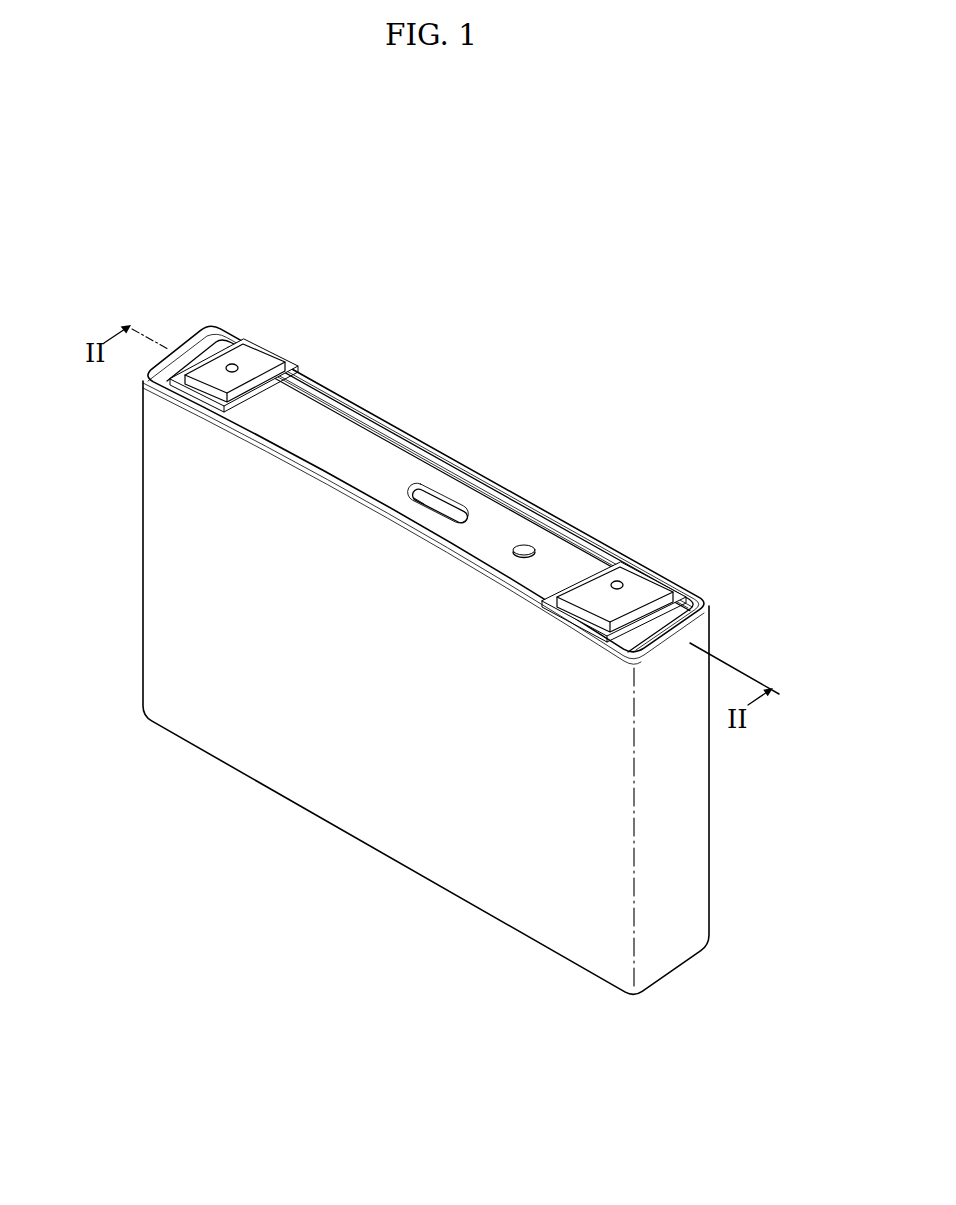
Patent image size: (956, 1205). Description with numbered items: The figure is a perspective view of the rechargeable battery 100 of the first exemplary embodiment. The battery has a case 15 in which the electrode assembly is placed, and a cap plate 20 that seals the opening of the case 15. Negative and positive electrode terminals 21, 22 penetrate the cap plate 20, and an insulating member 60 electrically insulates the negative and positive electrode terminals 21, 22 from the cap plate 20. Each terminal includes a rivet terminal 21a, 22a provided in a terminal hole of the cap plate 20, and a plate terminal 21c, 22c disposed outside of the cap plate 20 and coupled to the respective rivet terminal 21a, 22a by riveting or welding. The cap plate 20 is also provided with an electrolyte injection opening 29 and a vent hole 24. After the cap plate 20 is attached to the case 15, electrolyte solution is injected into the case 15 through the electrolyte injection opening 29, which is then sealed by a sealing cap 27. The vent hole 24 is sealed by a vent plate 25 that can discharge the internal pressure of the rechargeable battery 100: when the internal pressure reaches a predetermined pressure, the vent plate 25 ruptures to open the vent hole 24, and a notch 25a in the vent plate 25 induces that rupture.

The rechargeable battery 100 is at (477, 156).
The case 15 is at (342, 806).
The cap plate 20 is at (355, 437).
The negative electrode terminal 21 is at (251, 334).
The rivet terminal 21a is at (234, 364).
The plate terminal 21c is at (270, 363).
The positive electrode terminal 22 is at (632, 559).
The rivet terminal 22a is at (621, 585).
The plate terminal 22c is at (653, 585).
The vent hole 24 is at (462, 502).
The vent plate 25 is at (482, 448).
The notch 25a is at (432, 497).
The sealing cap 27 is at (564, 507).
The electrolyte injection opening 29 is at (521, 547).
The insulating member 60 is at (286, 361).